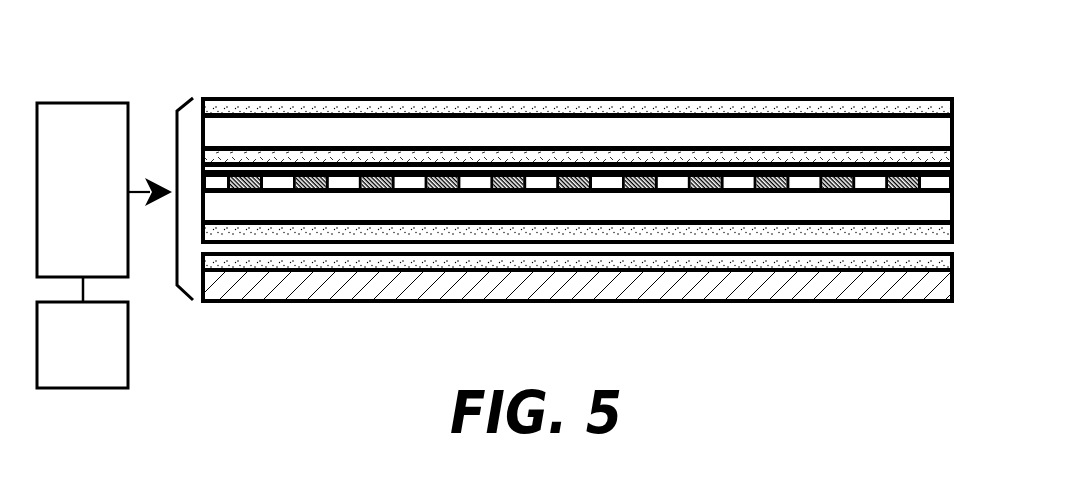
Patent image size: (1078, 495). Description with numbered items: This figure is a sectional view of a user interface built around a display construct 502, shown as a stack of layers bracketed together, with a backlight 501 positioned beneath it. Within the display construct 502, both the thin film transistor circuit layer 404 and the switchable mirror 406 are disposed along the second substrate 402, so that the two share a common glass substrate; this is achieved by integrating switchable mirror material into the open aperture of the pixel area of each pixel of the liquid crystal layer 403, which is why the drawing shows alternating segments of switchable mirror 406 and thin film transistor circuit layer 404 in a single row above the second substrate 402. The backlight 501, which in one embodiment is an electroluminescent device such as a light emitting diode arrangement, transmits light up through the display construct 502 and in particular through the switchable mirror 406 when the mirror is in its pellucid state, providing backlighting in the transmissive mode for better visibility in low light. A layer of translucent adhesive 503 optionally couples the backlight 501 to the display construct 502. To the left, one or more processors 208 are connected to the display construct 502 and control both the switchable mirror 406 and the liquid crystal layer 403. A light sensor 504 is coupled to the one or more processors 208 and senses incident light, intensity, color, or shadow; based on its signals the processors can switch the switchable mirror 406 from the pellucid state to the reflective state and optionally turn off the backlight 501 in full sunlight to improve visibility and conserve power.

The one or more processors 208 is at (72, 102).
The light sensor 504 is at (68, 390).
The display construct 502 is at (185, 105).
The switchable mirror 406 is at (344, 183).
The thin film transistor circuit layer 404 is at (444, 172).
The liquid crystal layer 403 is at (660, 167).
The second substrate 402 is at (768, 210).
The backlight 501 is at (482, 290).
The layer of translucent adhesive 503 is at (600, 262).